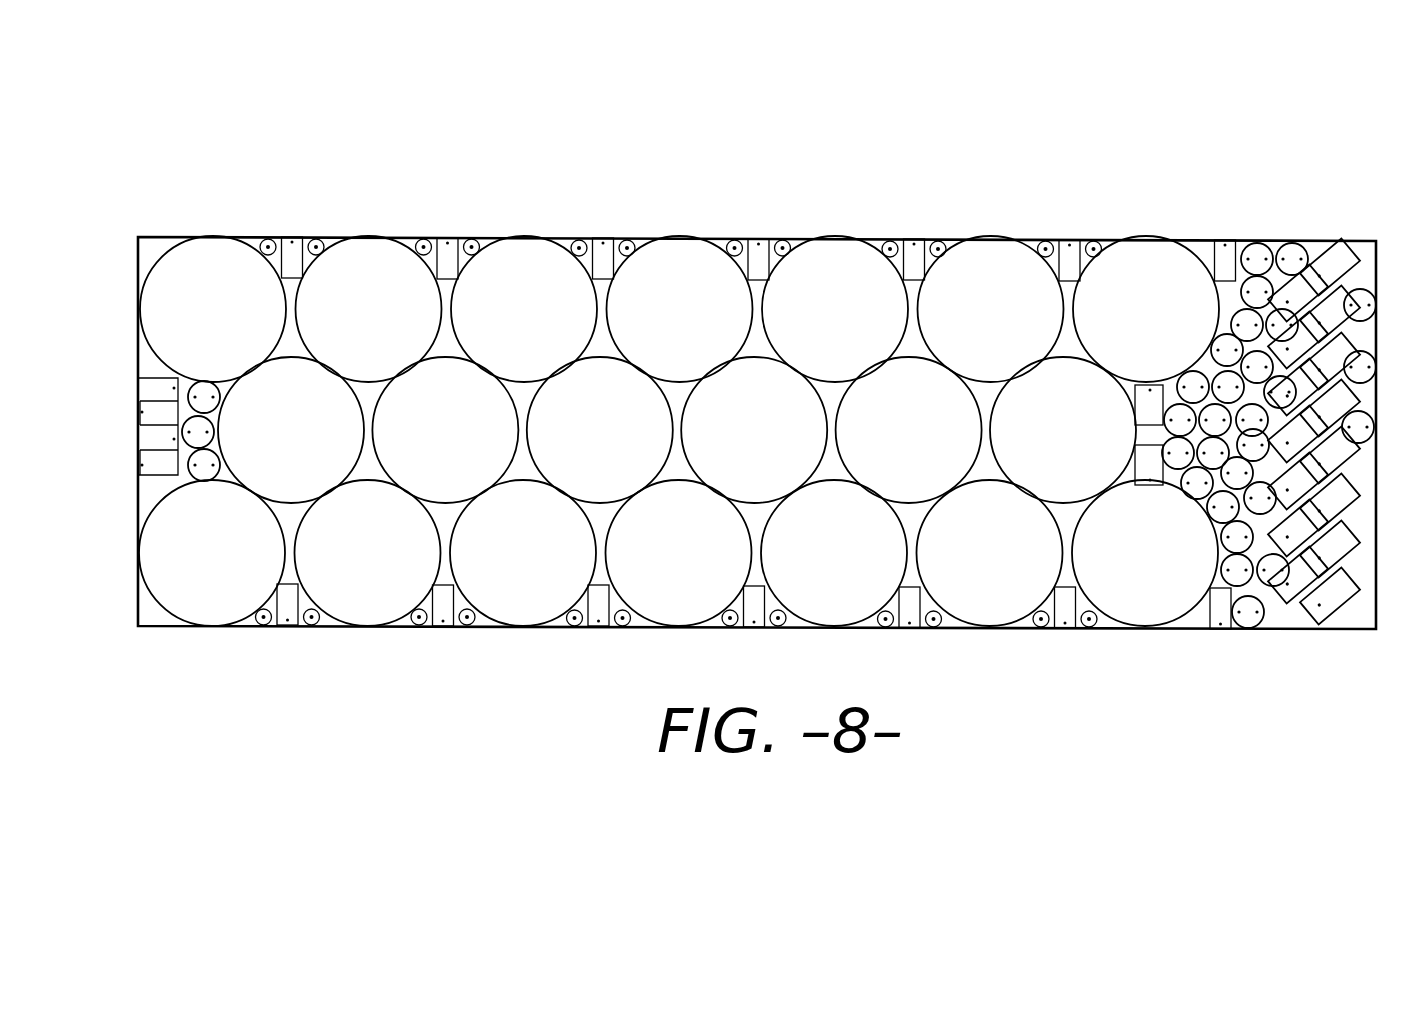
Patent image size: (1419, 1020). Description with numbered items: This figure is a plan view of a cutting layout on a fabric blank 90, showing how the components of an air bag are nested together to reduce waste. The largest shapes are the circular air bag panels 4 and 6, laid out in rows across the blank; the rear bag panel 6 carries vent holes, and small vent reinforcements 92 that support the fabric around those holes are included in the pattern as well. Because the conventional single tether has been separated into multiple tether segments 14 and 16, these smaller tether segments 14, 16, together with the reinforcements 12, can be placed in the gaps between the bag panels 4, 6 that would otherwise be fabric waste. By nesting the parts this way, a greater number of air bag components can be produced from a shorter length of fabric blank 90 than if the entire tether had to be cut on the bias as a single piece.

The fabric blank 90 is at (1326, 203).
The vent reinforcements 92 is at (268, 238).
The air bag panel 4 is at (202, 597).
The rear bag panel 6 is at (377, 597).
The tether segment 14 is at (1060, 617).
The reinforcements 12 is at (1250, 618).
The tether segment 16 is at (1280, 595).